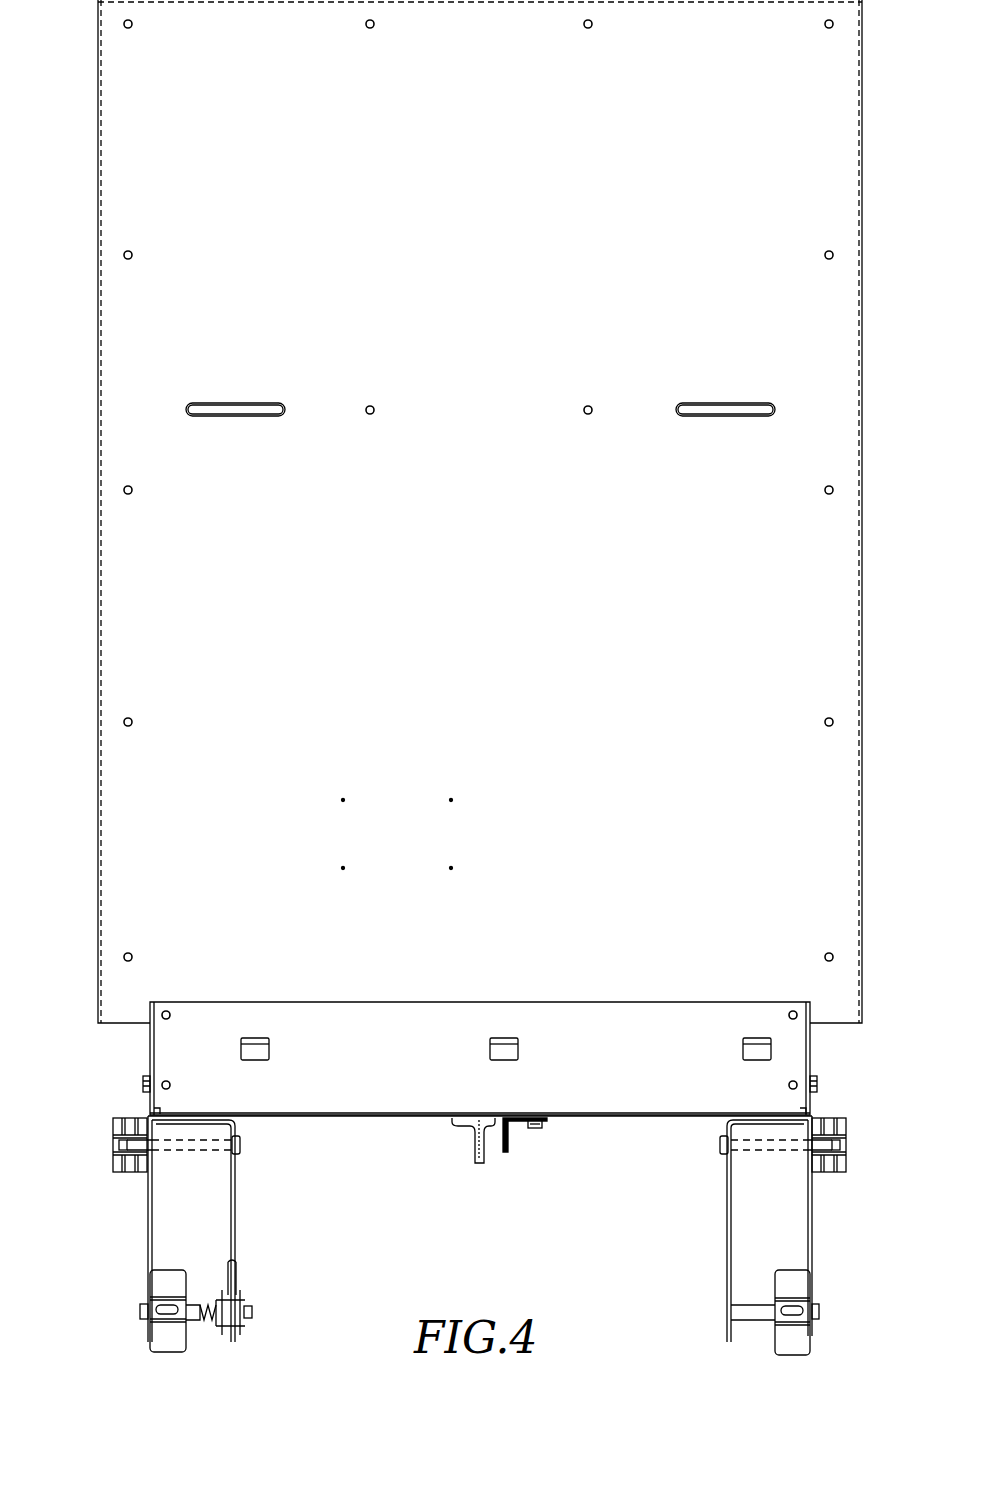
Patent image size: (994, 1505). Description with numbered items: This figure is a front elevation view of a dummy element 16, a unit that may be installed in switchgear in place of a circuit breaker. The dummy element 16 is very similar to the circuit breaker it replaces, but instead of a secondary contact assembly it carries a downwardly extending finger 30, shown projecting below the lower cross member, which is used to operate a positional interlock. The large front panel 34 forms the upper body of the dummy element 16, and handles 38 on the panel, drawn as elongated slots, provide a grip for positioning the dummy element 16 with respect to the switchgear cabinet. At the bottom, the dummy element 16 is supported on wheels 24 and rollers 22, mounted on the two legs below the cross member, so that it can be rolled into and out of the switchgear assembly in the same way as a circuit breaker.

The dummy element 16 is at (62, 560).
The rollers 22 is at (792, 1356).
The wheels 24 is at (828, 1118).
The downwardly extending finger 30 is at (508, 1142).
The front panel 34 is at (112, 140).
The handle 38 is at (727, 408).